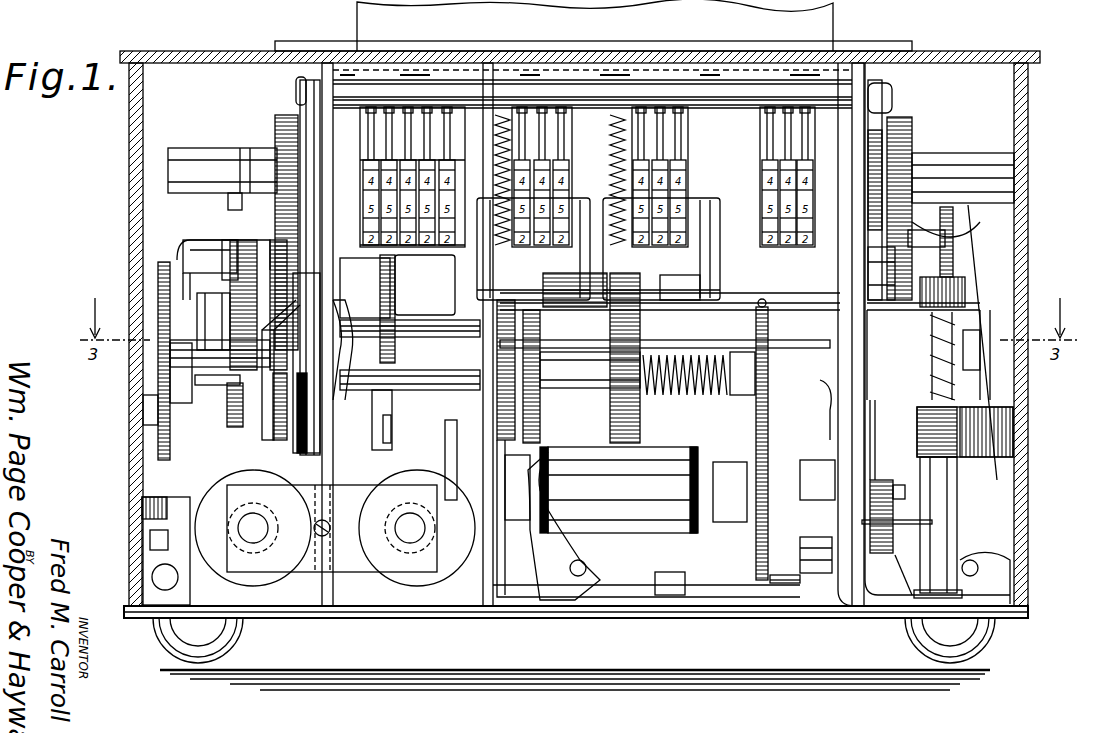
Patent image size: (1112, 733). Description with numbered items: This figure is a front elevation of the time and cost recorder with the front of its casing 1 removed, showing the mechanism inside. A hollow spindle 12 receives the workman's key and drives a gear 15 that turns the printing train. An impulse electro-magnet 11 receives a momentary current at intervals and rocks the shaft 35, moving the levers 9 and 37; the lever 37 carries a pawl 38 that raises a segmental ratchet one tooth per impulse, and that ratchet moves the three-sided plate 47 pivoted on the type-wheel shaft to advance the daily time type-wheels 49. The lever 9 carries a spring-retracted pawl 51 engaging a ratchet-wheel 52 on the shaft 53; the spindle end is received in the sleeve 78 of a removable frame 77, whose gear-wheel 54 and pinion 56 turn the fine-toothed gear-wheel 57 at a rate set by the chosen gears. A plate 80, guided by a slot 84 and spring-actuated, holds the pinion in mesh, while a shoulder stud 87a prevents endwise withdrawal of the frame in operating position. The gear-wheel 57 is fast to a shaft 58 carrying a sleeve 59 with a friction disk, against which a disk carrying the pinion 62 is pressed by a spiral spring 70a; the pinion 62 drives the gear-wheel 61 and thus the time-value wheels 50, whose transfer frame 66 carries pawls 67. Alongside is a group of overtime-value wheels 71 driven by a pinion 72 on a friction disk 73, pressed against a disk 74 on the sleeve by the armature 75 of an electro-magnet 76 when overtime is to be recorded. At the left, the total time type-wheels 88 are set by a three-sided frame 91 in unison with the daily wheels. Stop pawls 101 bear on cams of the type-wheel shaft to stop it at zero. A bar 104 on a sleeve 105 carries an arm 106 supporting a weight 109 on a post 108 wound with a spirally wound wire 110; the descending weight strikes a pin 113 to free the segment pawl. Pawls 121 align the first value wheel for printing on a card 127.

The box or casing 1 is at (129, 515).
The lever 9 is at (393, 440).
The impulse electro-magnet 11 is at (445, 574).
The hollow spindle 12 is at (208, 148).
The gear 15 is at (938, 248).
The shaft 35 is at (465, 495).
The lever 37 is at (788, 510).
The pawl 38 is at (820, 400).
The plate 47 is at (740, 305).
The time type-wheels 49 is at (752, 165).
The type-wheels 50 is at (645, 165).
The spring-retracted pawl 51 is at (393, 403).
The ratchet-wheel 52 is at (398, 353).
The shaft 53 is at (398, 285).
The gear-wheel 54 is at (250, 312).
The pinion 56 is at (165, 262).
The gear-wheel 57 is at (150, 410).
The shaft 58 is at (214, 388).
The sleeve 59 is at (590, 370).
The gear-wheel 61 is at (680, 287).
The pinion 62 is at (643, 395).
The three-sided frame 66 is at (661, 249).
The pawls 67 is at (688, 155).
The spiral spring 70a is at (690, 396).
The overtime-value wheels 71 is at (515, 160).
The pinion 72 is at (506, 370).
The friction disk 73 is at (551, 519).
The disk 74 is at (541, 423).
The armature 75 is at (517, 487).
The electro-magnet 76 is at (643, 490).
The frame 77 is at (262, 296).
The sleeve 78 is at (341, 359).
The plate 80 is at (205, 243).
The slot 84 is at (282, 372).
The shoulder stud 87a is at (265, 425).
The time type-wheels 88 is at (412, 177).
The three-sided frame 91 is at (408, 309).
The stop pawls 101 is at (905, 150).
The plate or bar 104 is at (806, 555).
The sleeve 105 is at (910, 527).
The arm 106 is at (912, 583).
The post 108 is at (960, 390).
The weight 109 is at (1013, 427).
The spirally wound wire 110 is at (958, 376).
The pin or arm 113 is at (890, 480).
The pawls 121 is at (545, 152).
The card 127 is at (833, 28).